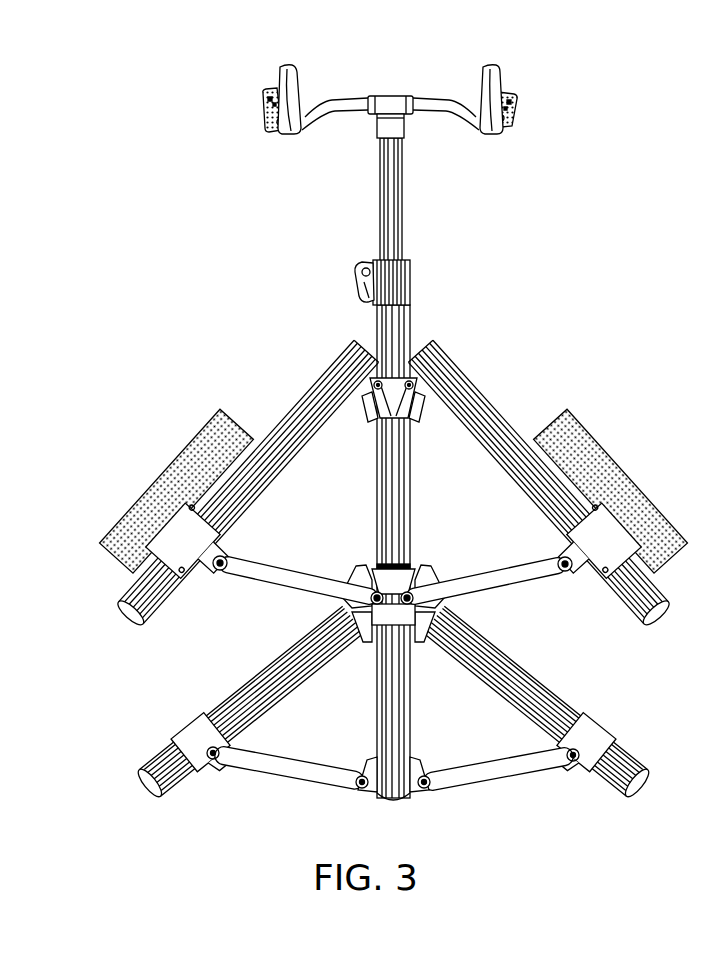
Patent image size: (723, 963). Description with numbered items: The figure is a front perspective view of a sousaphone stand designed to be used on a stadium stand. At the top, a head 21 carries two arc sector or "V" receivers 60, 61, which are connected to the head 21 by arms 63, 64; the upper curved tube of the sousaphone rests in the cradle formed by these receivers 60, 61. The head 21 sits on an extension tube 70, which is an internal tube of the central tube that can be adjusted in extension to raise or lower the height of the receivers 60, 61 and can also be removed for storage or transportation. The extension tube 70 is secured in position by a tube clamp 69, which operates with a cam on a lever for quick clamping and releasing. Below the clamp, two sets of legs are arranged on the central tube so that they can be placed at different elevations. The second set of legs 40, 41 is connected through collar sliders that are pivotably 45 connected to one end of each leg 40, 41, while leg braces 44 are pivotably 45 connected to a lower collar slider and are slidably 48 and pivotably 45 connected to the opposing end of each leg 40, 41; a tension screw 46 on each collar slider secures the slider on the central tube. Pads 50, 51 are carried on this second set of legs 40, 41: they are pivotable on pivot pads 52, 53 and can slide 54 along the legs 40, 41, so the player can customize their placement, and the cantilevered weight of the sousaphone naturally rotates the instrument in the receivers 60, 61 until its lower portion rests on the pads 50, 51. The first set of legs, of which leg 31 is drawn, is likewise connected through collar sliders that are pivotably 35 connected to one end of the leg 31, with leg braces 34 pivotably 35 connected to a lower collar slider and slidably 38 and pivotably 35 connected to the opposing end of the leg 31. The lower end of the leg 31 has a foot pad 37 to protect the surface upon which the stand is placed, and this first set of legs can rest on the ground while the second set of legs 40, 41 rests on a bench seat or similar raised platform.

The head 21 is at (400, 96).
The leg (first set of legs) 31 is at (565, 697).
The leg brace 34 is at (282, 753).
The pivotable connection 35 is at (557, 743).
The foot pad 37 is at (650, 788).
The slidable connection 38 is at (572, 760).
The leg (second set of legs) 40 is at (307, 390).
The leg (second set of legs) 41 is at (540, 517).
The leg brace 44 is at (528, 587).
The pivotable connection 45 is at (372, 562).
The tension screw 46 is at (415, 565).
The slidable connection 48 is at (198, 575).
The pad 50 is at (197, 430).
The pad 51 is at (582, 425).
The pivot pad 52 is at (187, 507).
The pivot pad 53 is at (610, 508).
The slide 54 is at (182, 570).
The arc sector or V receiver 60 is at (507, 113).
The arc sector or V receiver 61 is at (273, 115).
The arm 63 is at (447, 118).
The arm 64 is at (348, 113).
The tube clamp 69 is at (412, 273).
The extension tube 70 is at (403, 212).